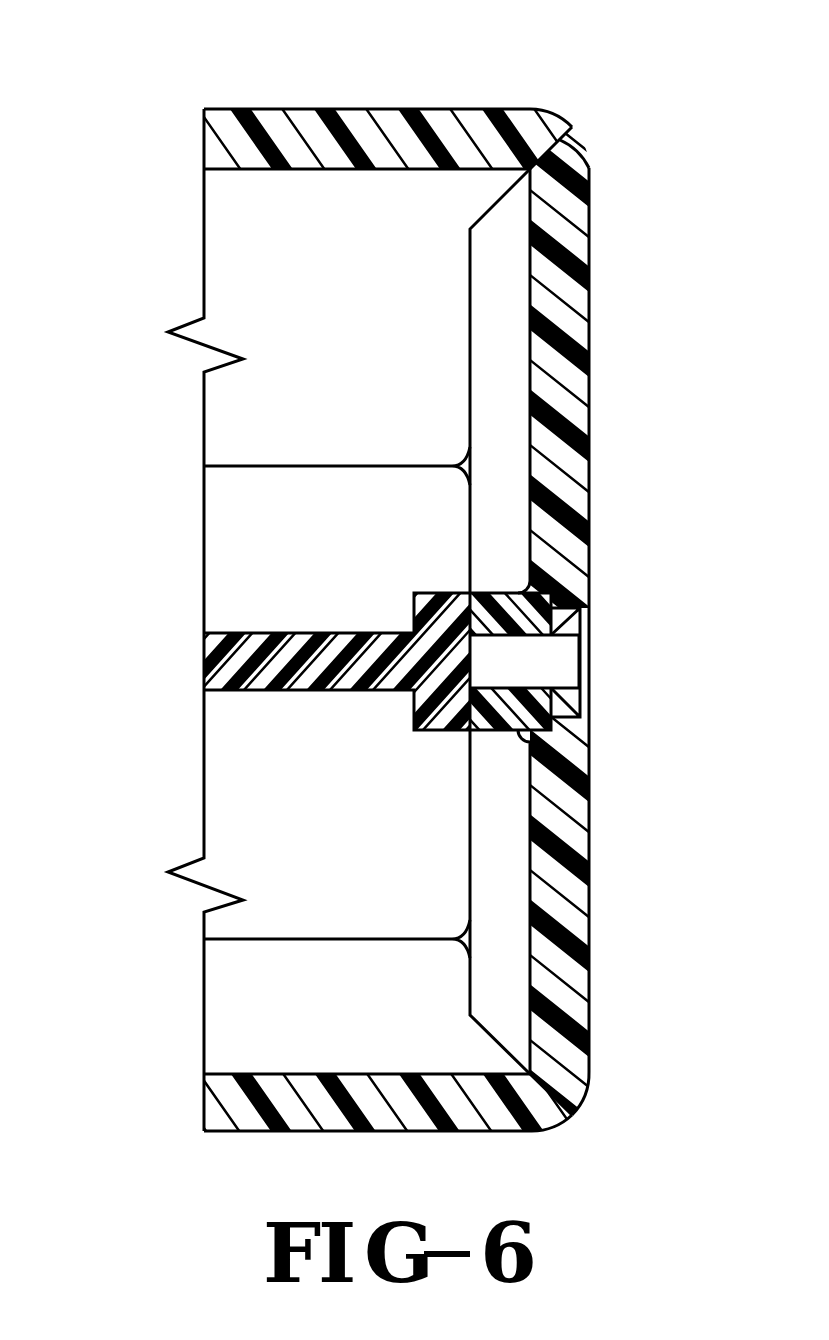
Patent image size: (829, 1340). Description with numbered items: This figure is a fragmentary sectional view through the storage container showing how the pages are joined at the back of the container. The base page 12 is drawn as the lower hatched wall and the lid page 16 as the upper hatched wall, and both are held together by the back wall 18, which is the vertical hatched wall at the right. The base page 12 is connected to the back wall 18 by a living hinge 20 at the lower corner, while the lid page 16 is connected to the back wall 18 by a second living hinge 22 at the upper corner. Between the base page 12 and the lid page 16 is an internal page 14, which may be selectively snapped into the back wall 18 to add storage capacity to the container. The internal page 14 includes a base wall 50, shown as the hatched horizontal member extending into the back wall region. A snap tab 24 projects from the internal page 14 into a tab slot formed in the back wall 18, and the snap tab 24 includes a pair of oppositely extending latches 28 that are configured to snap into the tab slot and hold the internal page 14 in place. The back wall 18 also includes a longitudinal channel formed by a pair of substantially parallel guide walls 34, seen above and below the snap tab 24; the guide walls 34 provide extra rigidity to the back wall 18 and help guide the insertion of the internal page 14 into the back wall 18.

The base page 12 is at (253, 1165).
The internal page 14 is at (193, 527).
The lid page 16 is at (252, 78).
The back wall 18 is at (626, 888).
The living hinge 20 is at (568, 1112).
The second living hinge 22 is at (558, 137).
The snap tab 24 is at (584, 660).
The latches 28 is at (565, 625).
The guide walls 34 is at (505, 605).
The base wall 50 is at (184, 690).